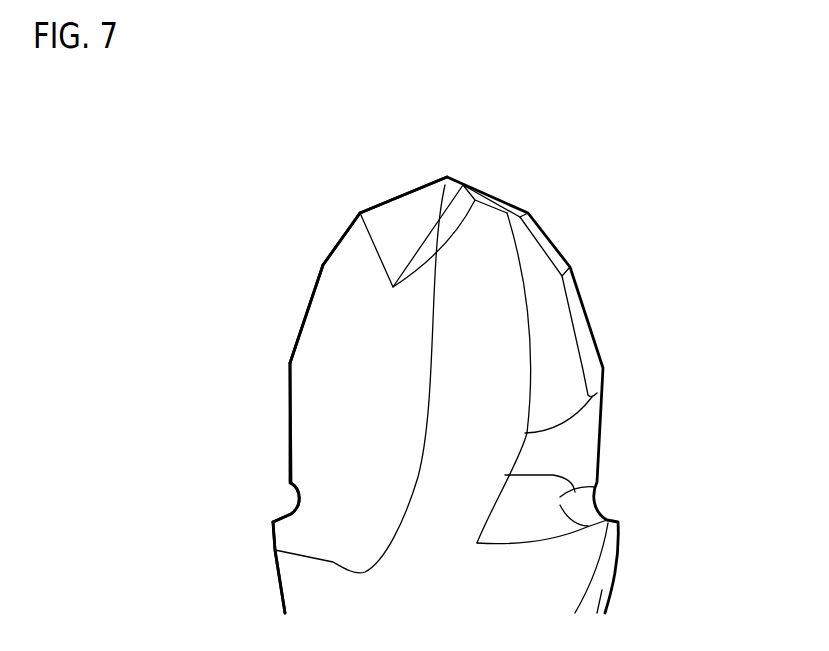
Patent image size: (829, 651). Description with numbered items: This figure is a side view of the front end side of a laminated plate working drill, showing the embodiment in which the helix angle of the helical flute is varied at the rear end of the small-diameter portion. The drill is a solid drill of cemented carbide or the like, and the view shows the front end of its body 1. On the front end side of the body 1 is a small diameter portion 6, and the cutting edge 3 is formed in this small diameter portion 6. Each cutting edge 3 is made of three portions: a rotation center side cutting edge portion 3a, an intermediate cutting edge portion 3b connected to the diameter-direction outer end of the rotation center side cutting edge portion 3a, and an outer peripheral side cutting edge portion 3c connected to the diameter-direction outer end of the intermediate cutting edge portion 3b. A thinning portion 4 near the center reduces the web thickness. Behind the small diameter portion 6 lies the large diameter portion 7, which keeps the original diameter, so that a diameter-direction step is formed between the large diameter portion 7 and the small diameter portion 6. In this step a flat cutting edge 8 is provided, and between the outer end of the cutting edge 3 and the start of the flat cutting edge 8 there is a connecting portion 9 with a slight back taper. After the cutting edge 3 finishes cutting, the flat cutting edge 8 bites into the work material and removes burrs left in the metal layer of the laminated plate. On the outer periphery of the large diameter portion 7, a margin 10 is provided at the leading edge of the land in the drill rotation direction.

The body 1 is at (518, 188).
The cutting edge 3 is at (360, 213).
The rotation center side cutting edge portion 3a is at (405, 192).
The intermediate cutting edge portion 3b is at (335, 245).
The outer peripheral side cutting edge portion 3c is at (305, 313).
The thinning portion 4 is at (442, 188).
The small diameter portion 6 is at (690, 175).
The large diameter portion 7 is at (282, 598).
The flat cutting edge 8 is at (283, 518).
The connecting portion 9 is at (290, 425).
The margin 10 is at (602, 580).